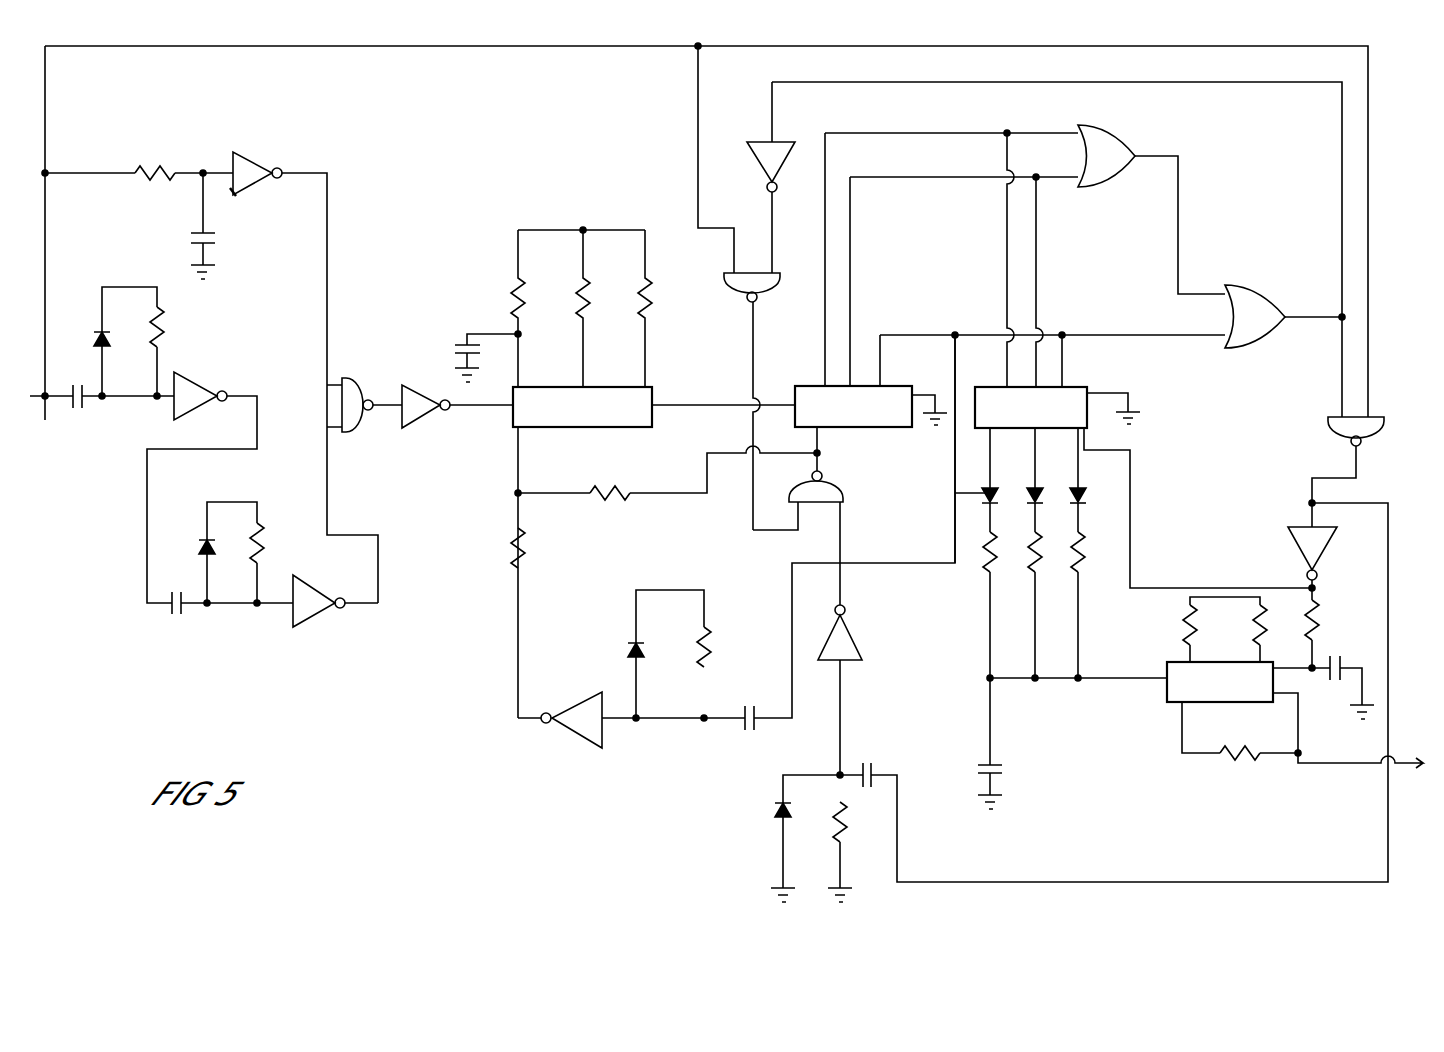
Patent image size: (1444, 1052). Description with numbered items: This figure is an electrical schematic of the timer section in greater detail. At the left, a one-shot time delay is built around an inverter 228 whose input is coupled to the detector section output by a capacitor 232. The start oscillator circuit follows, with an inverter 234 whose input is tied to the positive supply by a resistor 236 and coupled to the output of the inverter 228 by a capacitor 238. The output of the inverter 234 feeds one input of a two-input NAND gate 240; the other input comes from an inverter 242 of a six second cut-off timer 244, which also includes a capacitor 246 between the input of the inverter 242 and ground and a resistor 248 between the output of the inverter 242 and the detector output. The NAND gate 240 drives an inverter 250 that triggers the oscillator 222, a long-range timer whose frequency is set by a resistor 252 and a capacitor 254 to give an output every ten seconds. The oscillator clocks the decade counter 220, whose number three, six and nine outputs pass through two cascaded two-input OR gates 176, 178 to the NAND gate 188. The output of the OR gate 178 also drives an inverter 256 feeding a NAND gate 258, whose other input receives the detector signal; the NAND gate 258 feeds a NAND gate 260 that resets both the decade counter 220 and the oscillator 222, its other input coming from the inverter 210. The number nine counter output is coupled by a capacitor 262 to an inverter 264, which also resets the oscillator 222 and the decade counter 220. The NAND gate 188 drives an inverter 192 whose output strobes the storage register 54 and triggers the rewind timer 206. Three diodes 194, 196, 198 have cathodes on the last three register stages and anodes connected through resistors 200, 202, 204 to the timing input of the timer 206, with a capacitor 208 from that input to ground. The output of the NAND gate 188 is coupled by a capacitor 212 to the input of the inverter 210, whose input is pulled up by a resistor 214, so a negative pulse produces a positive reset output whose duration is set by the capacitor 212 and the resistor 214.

The resistor 248 is at (147, 165).
The inverter 242 is at (252, 162).
The six second cut-off timer 244 is at (232, 198).
The capacitor 246 is at (192, 238).
The resistor 236 is at (272, 555).
The inverter 228 is at (208, 382).
The capacitor 232 is at (88, 410).
The NAND gate 240 is at (370, 362).
The inverter 250 is at (410, 430).
The resistor 252 is at (514, 300).
The capacitor 254 is at (450, 338).
The oscillator 222 is at (568, 428).
The capacitor 238 is at (166, 614).
The inverter 234 is at (316, 620).
The inverter 264 is at (584, 694).
The NAND gate 260 is at (724, 642).
The capacitor 262 is at (760, 726).
The inverter 256 is at (784, 150).
The NAND gate 258 is at (762, 292).
The decade counter 220 is at (858, 428).
The storage register 54 is at (1068, 386).
The OR gate 176 is at (1112, 136).
The OR gate 178 is at (1246, 286).
The NAND gate 188 is at (1378, 418).
The inverter 192 is at (1290, 528).
The diode 194 is at (956, 494).
The diode 196 is at (1044, 486).
The diode 198 is at (1084, 506).
The resistor 200 is at (985, 568).
The resistor 202 is at (1030, 572).
The resistor 204 is at (1082, 572).
The long-range timer 206 is at (1166, 706).
The capacitor 208 is at (1002, 780).
The inverter 210 is at (848, 616).
The capacitor 212 is at (874, 772).
The resistor 214 is at (842, 844).